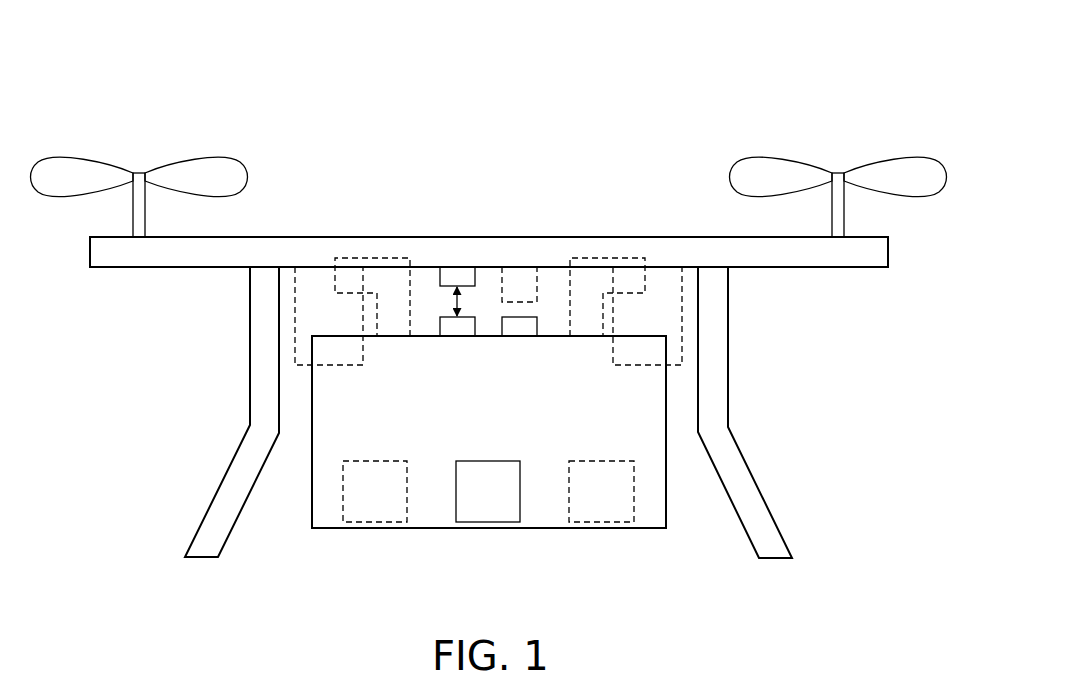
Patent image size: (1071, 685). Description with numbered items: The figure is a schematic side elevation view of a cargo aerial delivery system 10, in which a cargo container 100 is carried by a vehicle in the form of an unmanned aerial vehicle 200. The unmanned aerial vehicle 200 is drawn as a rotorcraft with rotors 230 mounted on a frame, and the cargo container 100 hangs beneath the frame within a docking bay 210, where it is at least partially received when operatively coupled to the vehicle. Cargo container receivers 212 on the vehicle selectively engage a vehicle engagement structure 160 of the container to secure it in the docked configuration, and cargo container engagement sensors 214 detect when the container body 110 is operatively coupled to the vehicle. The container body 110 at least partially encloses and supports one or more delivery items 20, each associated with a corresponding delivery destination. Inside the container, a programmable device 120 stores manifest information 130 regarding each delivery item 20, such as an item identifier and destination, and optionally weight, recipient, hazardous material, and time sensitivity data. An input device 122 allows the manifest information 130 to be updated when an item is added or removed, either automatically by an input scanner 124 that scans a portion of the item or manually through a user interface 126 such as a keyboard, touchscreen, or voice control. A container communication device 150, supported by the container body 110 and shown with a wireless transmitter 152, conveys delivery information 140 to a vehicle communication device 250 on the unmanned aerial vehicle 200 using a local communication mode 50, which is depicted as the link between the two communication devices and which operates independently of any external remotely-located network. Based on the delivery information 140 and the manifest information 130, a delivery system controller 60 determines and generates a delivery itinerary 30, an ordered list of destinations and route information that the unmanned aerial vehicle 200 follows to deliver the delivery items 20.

The cargo aerial delivery system 10 is at (287, 48).
The delivery item 20 is at (407, 495).
The delivery itinerary 30 is at (512, 316).
The local communication mode 50 is at (440, 328).
The delivery system controller 60 is at (540, 315).
The cargo container 100 is at (668, 516).
The container body 110 is at (668, 493).
The programmable device 120 is at (541, 327).
The input device 122 is at (513, 337).
The input scanner 124 is at (519, 337).
The user interface 126 is at (525, 337).
The manifest information 130 is at (532, 337).
The delivery information 140 is at (465, 297).
The container communication device 150 is at (414, 344).
The wireless transmitter 152 is at (458, 337).
The vehicle engagement structure 160 is at (440, 274).
The unmanned aerial vehicle 200 is at (145, 123).
The docking bay 210 is at (292, 514).
The cargo container receiver 212 is at (290, 290).
The cargo container engagement sensor 214 is at (380, 262).
The rotor 230 is at (223, 158).
The vehicle communication device 250 is at (440, 272).